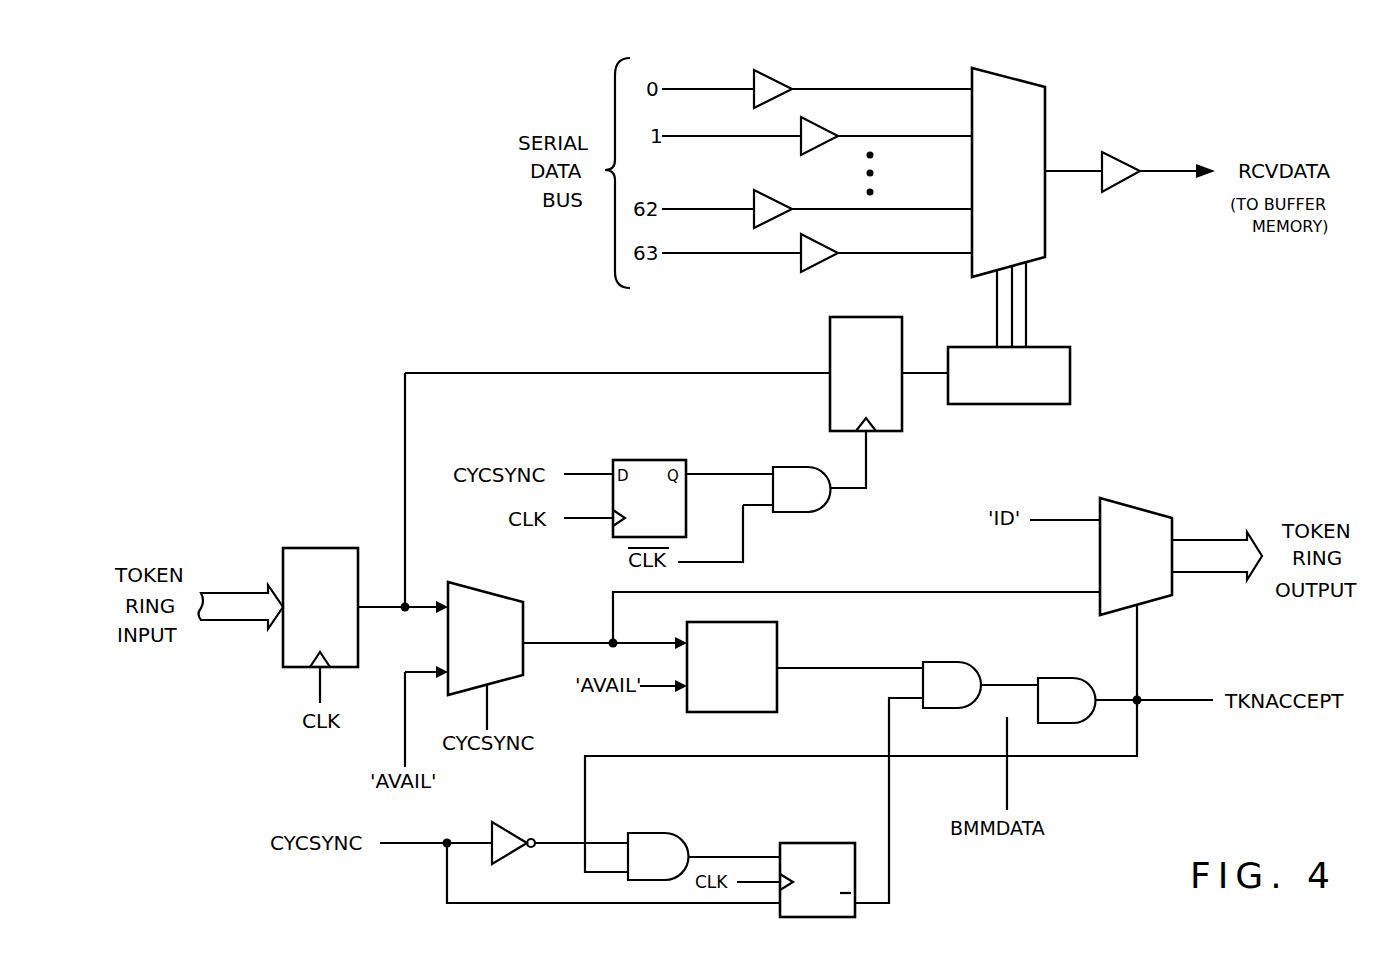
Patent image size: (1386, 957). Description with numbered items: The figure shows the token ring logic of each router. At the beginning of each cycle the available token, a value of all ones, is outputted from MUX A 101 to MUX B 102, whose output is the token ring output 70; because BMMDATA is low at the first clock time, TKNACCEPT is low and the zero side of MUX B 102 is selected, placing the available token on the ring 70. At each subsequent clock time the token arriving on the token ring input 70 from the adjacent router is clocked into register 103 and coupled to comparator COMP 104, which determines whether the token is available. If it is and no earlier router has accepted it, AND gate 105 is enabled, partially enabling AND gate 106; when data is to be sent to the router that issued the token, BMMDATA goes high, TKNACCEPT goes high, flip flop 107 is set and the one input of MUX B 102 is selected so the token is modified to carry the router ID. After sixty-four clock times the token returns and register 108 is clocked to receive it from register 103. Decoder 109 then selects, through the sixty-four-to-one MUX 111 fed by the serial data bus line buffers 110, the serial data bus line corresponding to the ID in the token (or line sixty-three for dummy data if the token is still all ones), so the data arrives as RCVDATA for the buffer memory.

The token ring 70 is at (223, 593).
The MUX A 101 is at (487, 592).
The MUX B 102 is at (1138, 507).
The register 103 is at (312, 548).
The comparator COMP 104 is at (777, 638).
The AND gate 105 is at (950, 662).
The AND gate 106 is at (1058, 678).
The flip flop 107 is at (806, 843).
The register 108 is at (830, 347).
The decoder 109 is at (1047, 347).
The buffer 110 is at (827, 258).
The 64-1 MUX 111 is at (1045, 252).